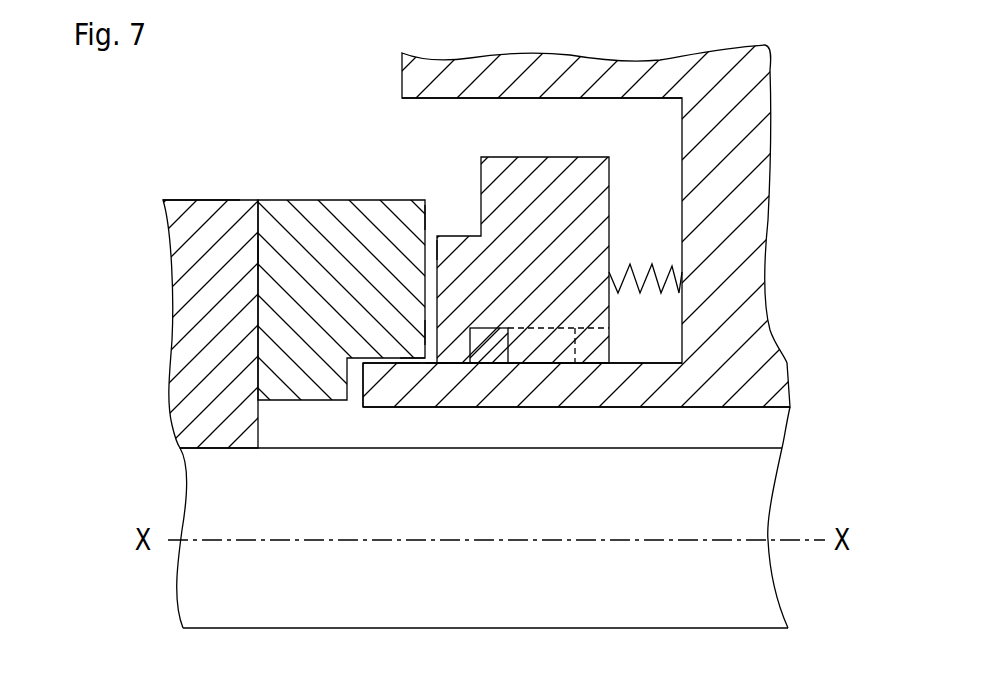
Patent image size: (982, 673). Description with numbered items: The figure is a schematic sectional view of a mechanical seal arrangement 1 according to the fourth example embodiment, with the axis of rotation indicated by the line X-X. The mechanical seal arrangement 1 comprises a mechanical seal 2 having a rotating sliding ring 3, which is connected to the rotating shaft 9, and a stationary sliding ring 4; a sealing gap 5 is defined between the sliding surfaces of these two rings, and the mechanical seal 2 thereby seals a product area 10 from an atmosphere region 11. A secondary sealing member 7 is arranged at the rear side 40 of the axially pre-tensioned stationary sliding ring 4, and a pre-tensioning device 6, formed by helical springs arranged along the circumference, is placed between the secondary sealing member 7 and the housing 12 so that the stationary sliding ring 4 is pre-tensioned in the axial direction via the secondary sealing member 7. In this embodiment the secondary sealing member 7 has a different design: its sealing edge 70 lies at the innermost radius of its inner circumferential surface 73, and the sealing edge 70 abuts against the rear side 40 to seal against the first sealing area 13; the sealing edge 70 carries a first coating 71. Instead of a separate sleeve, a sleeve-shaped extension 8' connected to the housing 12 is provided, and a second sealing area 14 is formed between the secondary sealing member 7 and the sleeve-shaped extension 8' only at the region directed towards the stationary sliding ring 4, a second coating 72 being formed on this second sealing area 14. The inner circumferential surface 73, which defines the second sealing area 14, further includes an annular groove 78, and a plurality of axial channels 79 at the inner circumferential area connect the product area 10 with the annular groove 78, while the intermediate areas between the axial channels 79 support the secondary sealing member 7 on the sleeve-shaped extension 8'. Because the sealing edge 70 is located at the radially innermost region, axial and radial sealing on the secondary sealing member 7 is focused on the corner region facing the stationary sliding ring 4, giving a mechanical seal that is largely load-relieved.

The mechanical seal arrangement 1 is at (256, 109).
The mechanical seal 2 is at (242, 185).
The rotating sliding ring 3 is at (212, 392).
The stationary sliding ring 4 is at (305, 378).
The sealing gap 5 is at (258, 258).
The pre-tensioning device 6 is at (665, 272).
The secondary sealing member 7 is at (583, 187).
The sleeve-shaped extension 8' is at (362, 446).
The rotating shaft 9 is at (738, 487).
The product area 10 is at (345, 173).
The atmosphere region 11 is at (690, 440).
The housing 12 is at (747, 148).
The first sealing area 13 is at (412, 335).
The second sealing area 14 is at (438, 382).
The rear side 40 is at (428, 218).
The sealing edge 70 is at (408, 365).
The first coating 71 is at (422, 356).
The second coating 72 is at (452, 364).
The inner circumferential surface 73 is at (482, 340).
The annular groove 78 is at (533, 364).
The axial channels 79 is at (581, 366).